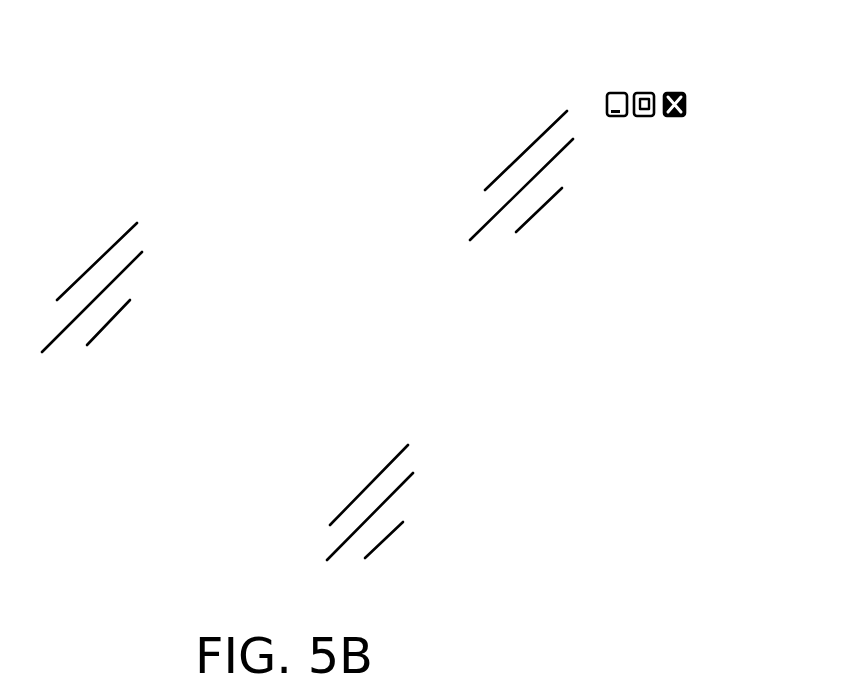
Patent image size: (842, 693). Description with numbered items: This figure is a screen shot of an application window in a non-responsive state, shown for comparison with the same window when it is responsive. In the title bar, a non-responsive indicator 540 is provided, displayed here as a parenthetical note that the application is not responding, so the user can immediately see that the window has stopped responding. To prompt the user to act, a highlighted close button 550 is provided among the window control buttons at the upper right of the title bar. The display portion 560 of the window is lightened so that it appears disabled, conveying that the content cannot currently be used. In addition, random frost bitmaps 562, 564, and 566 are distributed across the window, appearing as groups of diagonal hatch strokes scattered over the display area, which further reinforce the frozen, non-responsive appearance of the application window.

The non-responsive indicator 540 is at (281, 93).
The highlighted close button 550 is at (683, 92).
The display portion 560 is at (670, 165).
The random frost bitmap 562 is at (506, 175).
The random frost bitmap 564 is at (91, 287).
The random frost bitmap 566 is at (370, 502).